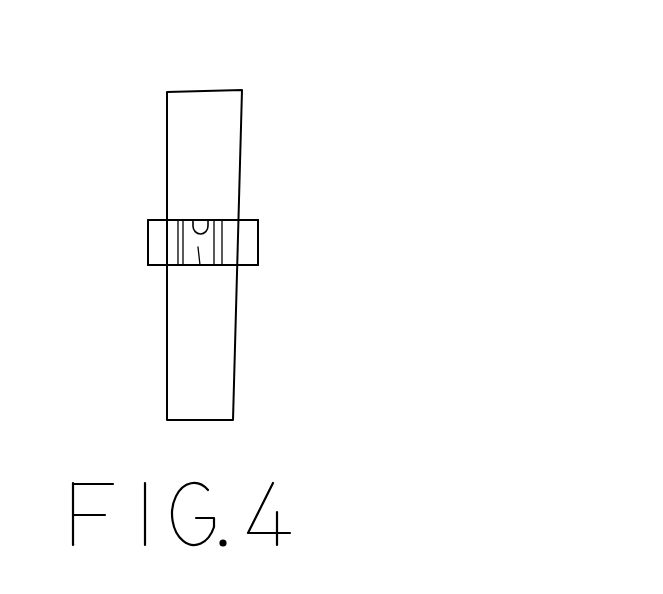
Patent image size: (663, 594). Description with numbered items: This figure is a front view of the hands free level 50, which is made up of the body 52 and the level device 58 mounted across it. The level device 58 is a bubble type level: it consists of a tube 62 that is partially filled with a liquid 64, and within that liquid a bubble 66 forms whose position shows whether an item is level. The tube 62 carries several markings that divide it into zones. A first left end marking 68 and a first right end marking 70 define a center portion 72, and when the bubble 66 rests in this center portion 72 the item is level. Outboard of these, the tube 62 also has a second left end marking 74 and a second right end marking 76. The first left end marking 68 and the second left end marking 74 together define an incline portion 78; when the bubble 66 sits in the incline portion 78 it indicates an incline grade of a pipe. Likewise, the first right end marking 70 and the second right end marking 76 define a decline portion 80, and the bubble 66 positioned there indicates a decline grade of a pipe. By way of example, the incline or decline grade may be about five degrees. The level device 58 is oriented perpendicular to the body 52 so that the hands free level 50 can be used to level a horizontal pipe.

The hands free level 50 is at (296, 109).
The body 52 is at (218, 383).
The level device 58 is at (266, 200).
The tube 62 is at (258, 246).
The liquid 64 is at (248, 250).
The bubble 66 is at (198, 218).
The first left end marking 68 is at (183, 265).
The first right end marking 70 is at (215, 265).
The center portion 72 is at (200, 265).
The second left end marking 74 is at (180, 241).
The second right end marking 76 is at (222, 240).
The incline portion 78 is at (180, 219).
The decline portion 80 is at (221, 219).